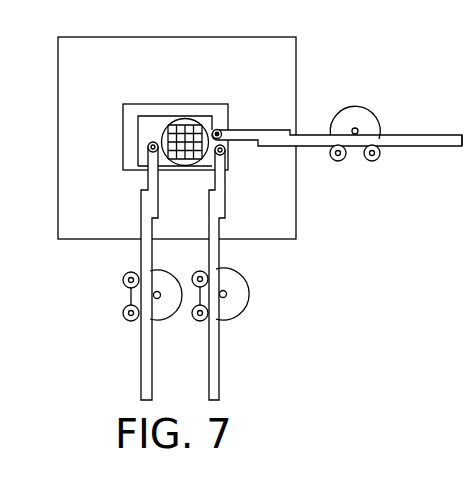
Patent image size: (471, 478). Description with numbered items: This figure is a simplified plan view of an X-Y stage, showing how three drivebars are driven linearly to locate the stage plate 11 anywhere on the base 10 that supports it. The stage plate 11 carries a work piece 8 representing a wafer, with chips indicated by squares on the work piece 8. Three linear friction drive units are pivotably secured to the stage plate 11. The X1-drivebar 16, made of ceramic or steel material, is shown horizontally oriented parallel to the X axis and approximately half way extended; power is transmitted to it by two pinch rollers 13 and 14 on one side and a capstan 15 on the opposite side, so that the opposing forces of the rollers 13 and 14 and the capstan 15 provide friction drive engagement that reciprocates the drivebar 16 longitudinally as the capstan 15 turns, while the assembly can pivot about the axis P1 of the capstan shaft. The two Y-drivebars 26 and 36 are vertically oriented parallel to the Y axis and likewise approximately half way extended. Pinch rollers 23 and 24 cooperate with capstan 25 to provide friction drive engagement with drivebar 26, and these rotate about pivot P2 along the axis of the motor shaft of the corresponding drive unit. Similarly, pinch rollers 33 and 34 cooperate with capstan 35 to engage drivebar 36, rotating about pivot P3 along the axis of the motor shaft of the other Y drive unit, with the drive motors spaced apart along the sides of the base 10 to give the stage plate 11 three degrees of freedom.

The base 10 is at (284, 51).
The X-Y stage plate 11 is at (138, 158).
The work piece 8 is at (187, 143).
The capstan 15 is at (371, 122).
The X1-drivebar 16 is at (452, 134).
The pivot P1 is at (355, 127).
The pinch roller 13 is at (338, 162).
The pinch roller 14 is at (381, 158).
The drivebar 36 is at (141, 388).
The drivebar 26 is at (220, 388).
The pinch roller 33 is at (123, 279).
The pinch roller 34 is at (123, 313).
The capstan 35 is at (157, 273).
The pivot P3 is at (157, 298).
The pinch roller 23 is at (205, 272).
The pinch roller 24 is at (207, 322).
The capstan 25 is at (233, 303).
The pivot P2 is at (228, 295).